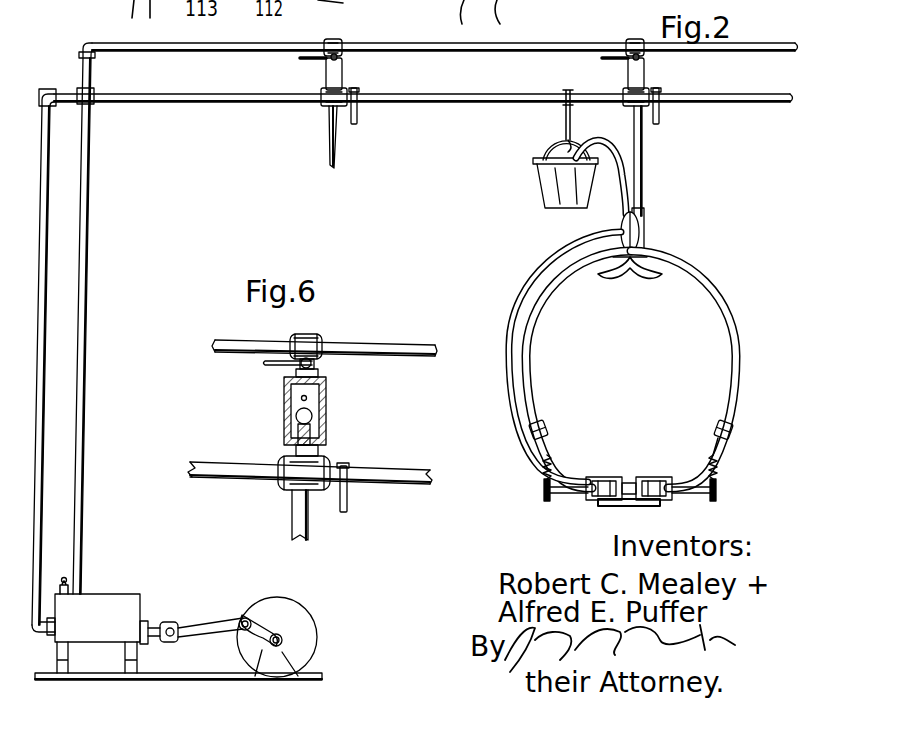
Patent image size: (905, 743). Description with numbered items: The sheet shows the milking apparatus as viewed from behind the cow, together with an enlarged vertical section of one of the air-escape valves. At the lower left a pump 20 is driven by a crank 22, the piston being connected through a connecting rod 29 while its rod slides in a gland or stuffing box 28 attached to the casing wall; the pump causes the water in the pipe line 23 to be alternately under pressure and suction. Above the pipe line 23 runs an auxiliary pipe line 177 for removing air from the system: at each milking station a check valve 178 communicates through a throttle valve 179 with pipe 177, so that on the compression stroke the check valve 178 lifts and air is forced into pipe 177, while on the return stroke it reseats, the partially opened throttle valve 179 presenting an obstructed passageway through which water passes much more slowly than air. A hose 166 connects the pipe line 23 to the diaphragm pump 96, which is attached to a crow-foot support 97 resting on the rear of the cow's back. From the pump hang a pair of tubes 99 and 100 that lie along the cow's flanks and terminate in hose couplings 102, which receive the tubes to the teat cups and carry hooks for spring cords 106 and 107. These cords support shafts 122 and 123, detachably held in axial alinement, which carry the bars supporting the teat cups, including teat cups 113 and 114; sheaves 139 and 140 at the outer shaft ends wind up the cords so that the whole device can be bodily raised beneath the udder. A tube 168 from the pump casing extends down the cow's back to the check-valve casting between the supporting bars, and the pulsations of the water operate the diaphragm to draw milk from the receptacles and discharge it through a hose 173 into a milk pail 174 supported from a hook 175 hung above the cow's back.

In FIG. 2, the pump 20 is at (110, 617).
In FIG. 2, the crank 22 is at (262, 630).
In FIG. 2, the pipe line 23 is at (273, 102).
In FIG. 6, the pipe line 23 is at (392, 470).
In FIG. 2, the gland or stuffing box 28 is at (150, 620).
In FIG. 2, the connecting rod 29 is at (200, 628).
In FIG. 2, the pump 96 is at (644, 227).
In FIG. 2, the crow-foot support 97 is at (640, 276).
In FIG. 2, the tube 99 is at (545, 283).
In FIG. 2, the tube 100 is at (712, 285).
In FIG. 2, the hose couplings 102 is at (545, 430).
In FIG. 2, the spring cord 106 is at (716, 465).
In FIG. 2, the spring cord 107 is at (543, 465).
In FIG. 2, the teat cup 113 is at (648, 479).
In FIG. 2, the teat cup 114 is at (607, 479).
In FIG. 2, the shaft or rod 122 is at (560, 494).
In FIG. 2, the shaft or rod 123 is at (692, 494).
In FIG. 2, the sheave 139 is at (716, 488).
In FIG. 2, the sheave 140 is at (543, 489).
In FIG. 2, the hose 166 is at (335, 138).
In FIG. 6, the hose 166 is at (300, 519).
In FIG. 2, the tube 168 is at (522, 285).
In FIG. 2, the hose 173 is at (620, 175).
In FIG. 2, the milk pail 174 is at (557, 185).
In FIG. 2, the hook 175 is at (566, 117).
In FIG. 2, the auxiliary pipe line 177 is at (530, 50).
In FIG. 6, the auxiliary pipe line 177 is at (390, 346).
In FIG. 2, the check valve 178 is at (324, 72).
In FIG. 6, the check valve 178 is at (286, 417).
In FIG. 2, the throttle valve 179 is at (340, 57).
In FIG. 6, the throttle valve 179 is at (314, 363).